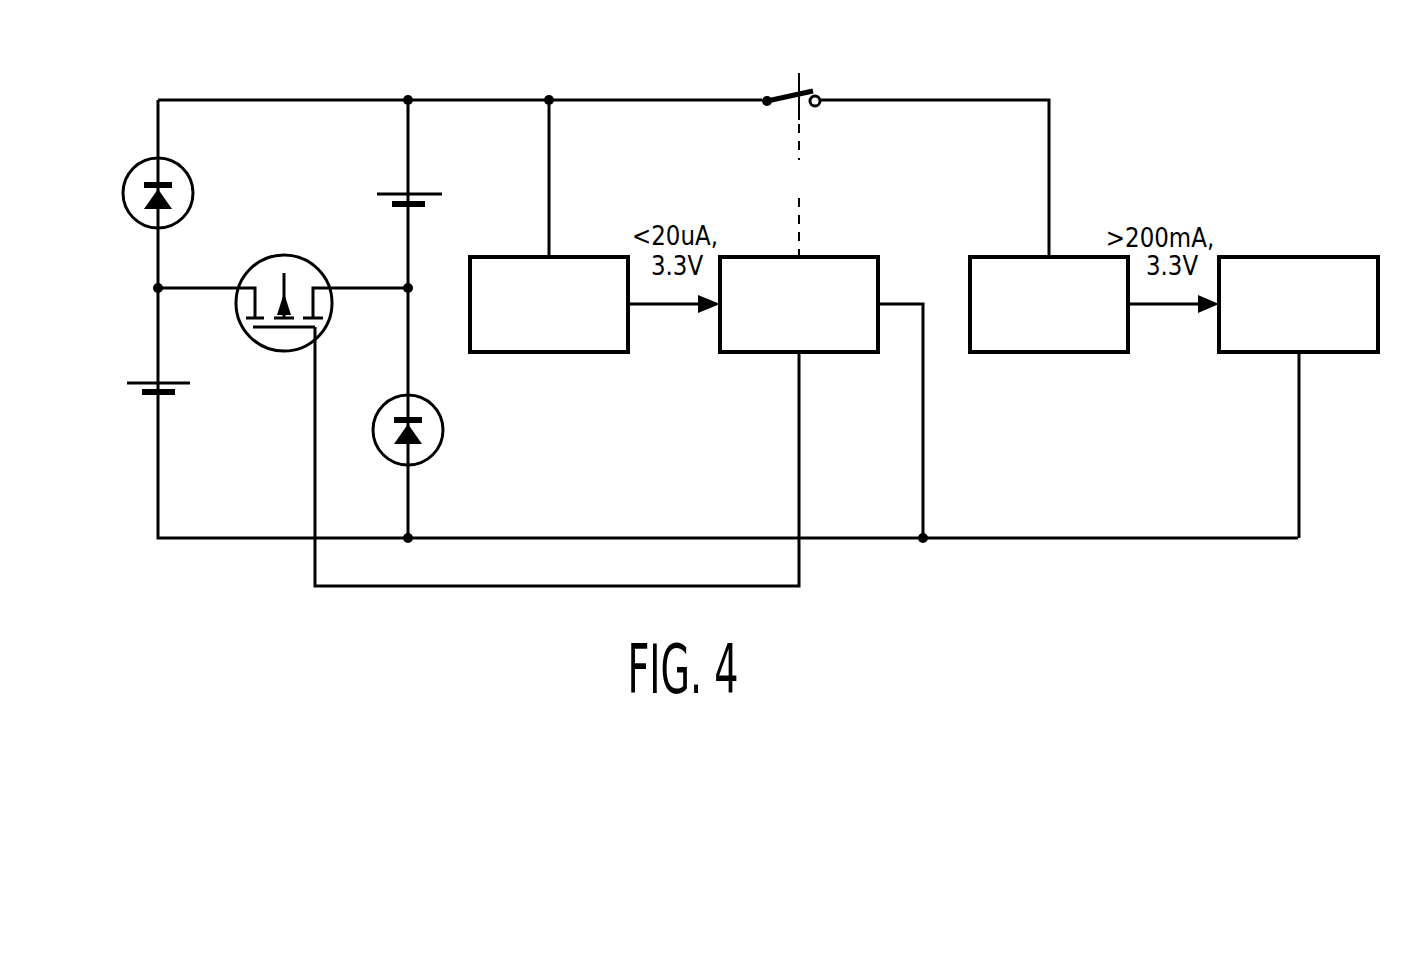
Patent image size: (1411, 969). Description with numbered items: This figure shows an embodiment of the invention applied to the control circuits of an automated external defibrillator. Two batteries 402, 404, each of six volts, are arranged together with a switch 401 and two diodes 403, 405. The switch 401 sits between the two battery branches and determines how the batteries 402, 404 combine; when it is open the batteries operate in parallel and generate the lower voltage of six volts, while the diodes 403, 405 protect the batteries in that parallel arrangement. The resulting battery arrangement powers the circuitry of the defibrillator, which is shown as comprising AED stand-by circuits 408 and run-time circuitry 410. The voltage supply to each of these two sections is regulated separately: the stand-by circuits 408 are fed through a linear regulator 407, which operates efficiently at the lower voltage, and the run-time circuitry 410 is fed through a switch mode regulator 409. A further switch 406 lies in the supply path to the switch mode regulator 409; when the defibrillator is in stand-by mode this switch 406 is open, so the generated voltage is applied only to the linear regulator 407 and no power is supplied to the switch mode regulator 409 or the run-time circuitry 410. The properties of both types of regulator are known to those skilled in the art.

The switch 401 is at (272, 257).
The battery 402 is at (127, 387).
The diode 403 is at (125, 181).
The battery 404 is at (377, 201).
The diode 405 is at (444, 430).
The switch 406 is at (775, 68).
The linear regulator 407 is at (598, 355).
The AED stand-by circuits 408 is at (840, 355).
The switch mode regulator 409 is at (1045, 355).
The run-time circuitry 410 is at (1352, 355).